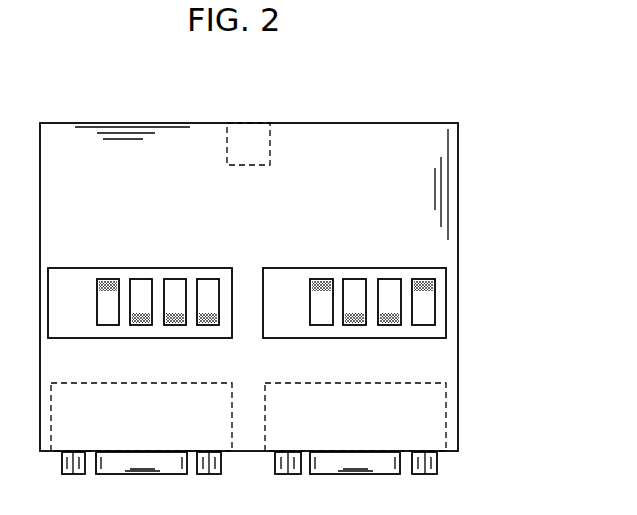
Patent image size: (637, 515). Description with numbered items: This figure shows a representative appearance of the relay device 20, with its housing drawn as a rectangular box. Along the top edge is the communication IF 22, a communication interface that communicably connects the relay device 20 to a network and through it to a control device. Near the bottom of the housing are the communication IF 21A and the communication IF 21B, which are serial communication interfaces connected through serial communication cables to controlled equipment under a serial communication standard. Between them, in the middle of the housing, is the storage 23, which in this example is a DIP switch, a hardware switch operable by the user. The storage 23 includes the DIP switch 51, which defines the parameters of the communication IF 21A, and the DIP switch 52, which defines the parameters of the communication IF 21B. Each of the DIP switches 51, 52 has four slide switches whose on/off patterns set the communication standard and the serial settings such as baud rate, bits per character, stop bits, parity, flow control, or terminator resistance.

The relay device 20 is at (474, 87).
The communication IF 22 is at (249, 123).
The storage 23 is at (307, 235).
The DIP switch 51 is at (170, 268).
The DIP switch 52 is at (330, 268).
The communication IF 21A is at (154, 394).
The communication IF 21B is at (368, 394).